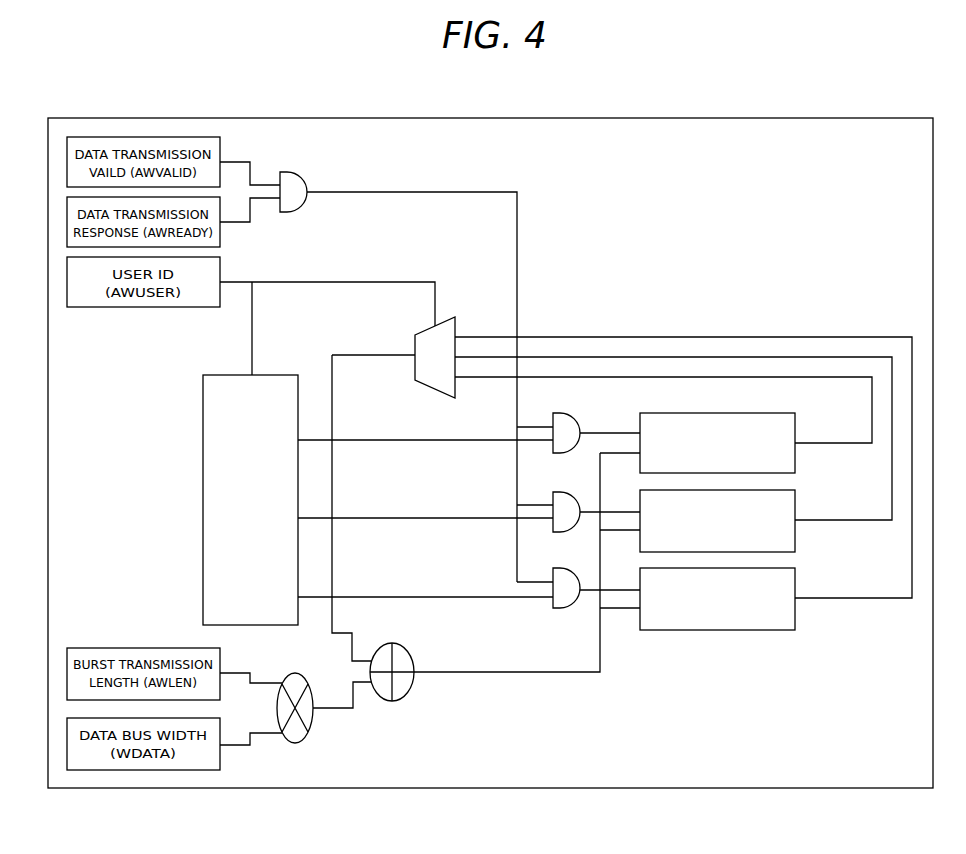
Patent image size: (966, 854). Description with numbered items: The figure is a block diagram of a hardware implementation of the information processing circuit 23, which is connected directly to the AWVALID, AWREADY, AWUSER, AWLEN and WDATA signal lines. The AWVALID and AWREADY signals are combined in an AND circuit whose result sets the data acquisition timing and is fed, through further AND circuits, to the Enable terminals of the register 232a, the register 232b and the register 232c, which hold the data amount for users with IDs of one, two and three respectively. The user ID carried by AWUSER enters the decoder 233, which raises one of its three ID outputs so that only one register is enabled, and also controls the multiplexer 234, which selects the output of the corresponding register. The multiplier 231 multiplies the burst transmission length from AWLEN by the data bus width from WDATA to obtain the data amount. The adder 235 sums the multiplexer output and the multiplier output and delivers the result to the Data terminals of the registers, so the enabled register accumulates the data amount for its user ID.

The information processing circuit 23 is at (693, 118).
The multiplier 231 is at (309, 729).
The register 232a is at (795, 466).
The register 232b is at (795, 542).
The register 232c is at (795, 620).
The decoder 233 is at (203, 492).
The multiplexer 234 is at (414, 347).
The adder 235 is at (412, 656).